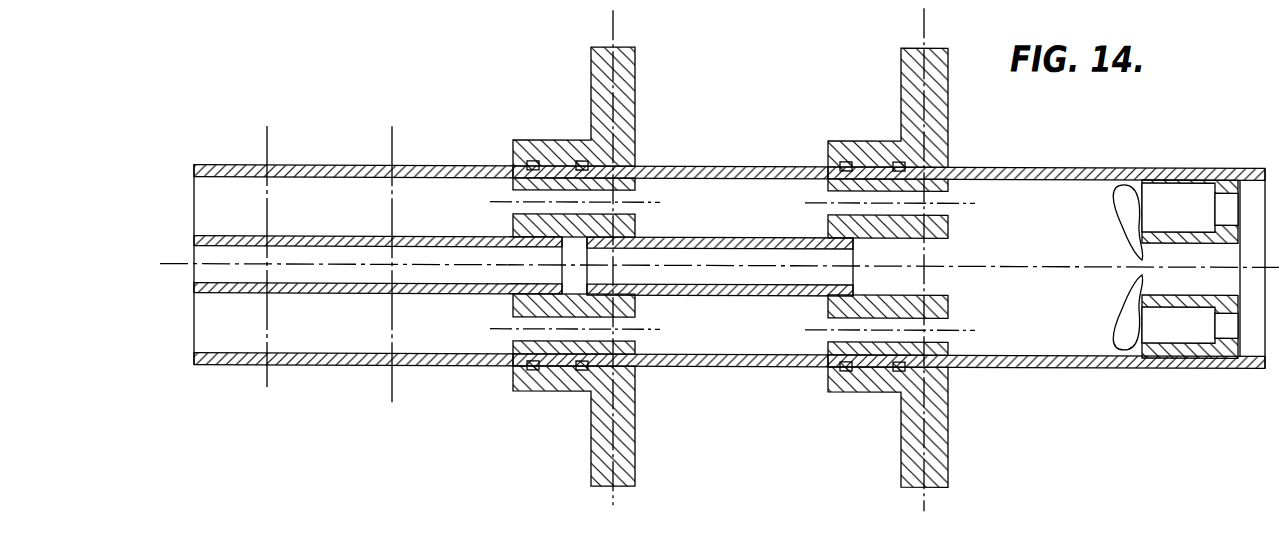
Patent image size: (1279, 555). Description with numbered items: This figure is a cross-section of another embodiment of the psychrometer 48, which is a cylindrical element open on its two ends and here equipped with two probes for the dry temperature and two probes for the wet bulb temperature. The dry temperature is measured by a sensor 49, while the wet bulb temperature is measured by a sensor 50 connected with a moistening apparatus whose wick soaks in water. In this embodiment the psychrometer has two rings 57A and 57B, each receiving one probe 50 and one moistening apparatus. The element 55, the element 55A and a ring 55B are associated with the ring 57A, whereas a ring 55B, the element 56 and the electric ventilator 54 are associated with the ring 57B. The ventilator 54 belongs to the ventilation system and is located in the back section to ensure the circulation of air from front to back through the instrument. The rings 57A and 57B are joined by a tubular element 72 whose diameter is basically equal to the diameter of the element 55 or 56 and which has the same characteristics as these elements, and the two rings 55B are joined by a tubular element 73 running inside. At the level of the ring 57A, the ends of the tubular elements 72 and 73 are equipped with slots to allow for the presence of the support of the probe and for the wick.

The psychrometer 48 is at (485, 423).
The sensor 49 is at (263, 149).
The sensor 50 is at (614, 494).
The electric ventilator 54 is at (1167, 200).
The element 55 is at (328, 164).
The element 55A is at (338, 234).
The ring 55B is at (513, 221).
The element 56 is at (1063, 164).
The ring 57A is at (598, 83).
The ring 57B is at (893, 135).
The tubular element 72 is at (712, 164).
The tubular element 73 is at (735, 234).